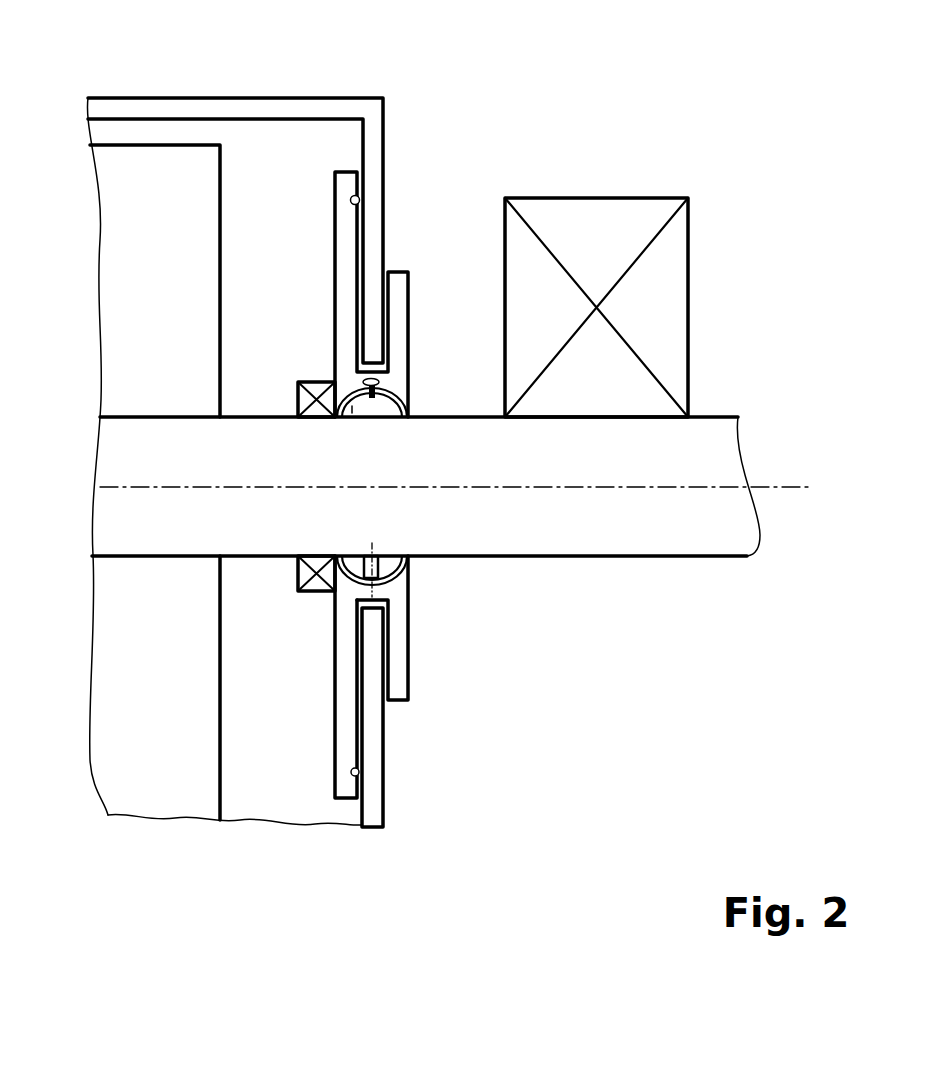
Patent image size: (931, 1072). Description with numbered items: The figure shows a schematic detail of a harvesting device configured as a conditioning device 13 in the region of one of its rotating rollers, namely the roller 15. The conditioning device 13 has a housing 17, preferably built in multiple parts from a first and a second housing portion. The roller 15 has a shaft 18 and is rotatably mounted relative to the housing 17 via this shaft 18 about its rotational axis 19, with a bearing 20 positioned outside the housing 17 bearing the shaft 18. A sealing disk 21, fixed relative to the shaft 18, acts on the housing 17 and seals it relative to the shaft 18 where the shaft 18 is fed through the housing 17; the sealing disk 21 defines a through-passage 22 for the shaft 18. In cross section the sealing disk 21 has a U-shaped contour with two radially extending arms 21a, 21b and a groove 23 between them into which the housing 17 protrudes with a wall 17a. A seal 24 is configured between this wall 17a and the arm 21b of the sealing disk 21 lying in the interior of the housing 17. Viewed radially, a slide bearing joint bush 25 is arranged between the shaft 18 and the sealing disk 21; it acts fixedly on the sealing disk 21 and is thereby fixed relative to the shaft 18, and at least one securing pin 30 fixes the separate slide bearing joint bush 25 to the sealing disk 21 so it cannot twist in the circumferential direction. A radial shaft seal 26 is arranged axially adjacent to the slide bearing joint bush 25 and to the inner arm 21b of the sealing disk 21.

The conditioning device 13 is at (450, 96).
The roller 15 is at (233, 177).
The housing 17 is at (345, 88).
The wall 17a is at (368, 773).
The shaft 18 is at (688, 540).
The rotational axis 19 is at (801, 480).
The bearing 20 is at (595, 197).
The sealing disk 21 is at (425, 677).
The arm 21a is at (398, 680).
The arm 21b is at (347, 723).
The through-passage 22 is at (418, 408).
The groove 23 is at (375, 603).
The seal 24 is at (355, 778).
The slide bearing joint bush 25 is at (352, 408).
The radial shaft seal 26 is at (297, 404).
The securing pin 30 is at (383, 381).